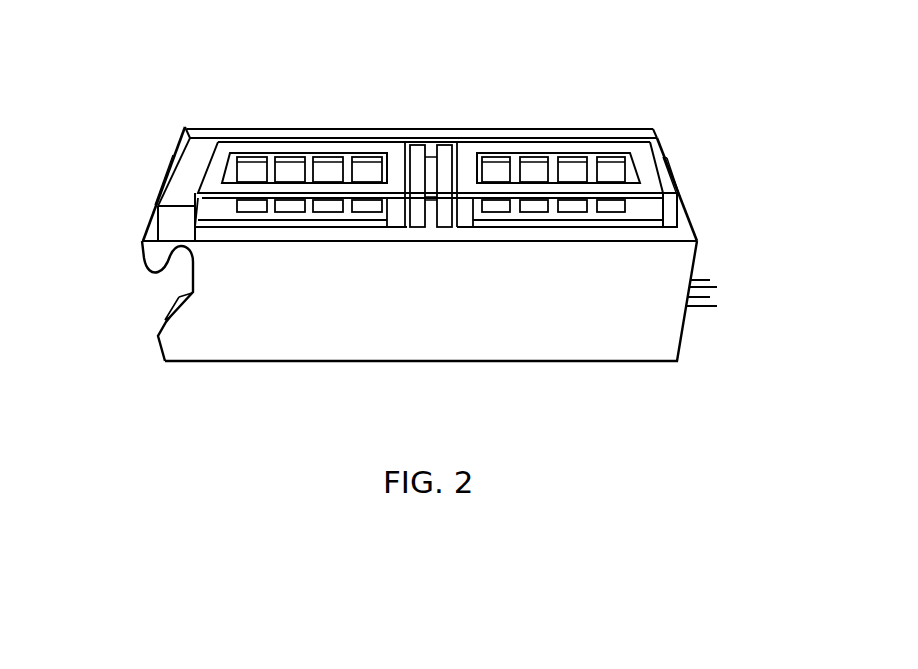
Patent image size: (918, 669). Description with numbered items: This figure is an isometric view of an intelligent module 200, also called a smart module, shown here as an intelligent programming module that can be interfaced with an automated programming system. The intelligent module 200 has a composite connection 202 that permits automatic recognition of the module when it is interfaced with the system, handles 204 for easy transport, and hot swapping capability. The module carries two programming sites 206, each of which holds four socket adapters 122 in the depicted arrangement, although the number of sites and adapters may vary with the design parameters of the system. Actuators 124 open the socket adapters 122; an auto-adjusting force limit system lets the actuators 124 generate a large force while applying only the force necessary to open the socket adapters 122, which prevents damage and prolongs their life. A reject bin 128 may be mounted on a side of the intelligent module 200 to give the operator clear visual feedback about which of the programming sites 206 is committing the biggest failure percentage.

The intelligent module 200 is at (168, 90).
The reject bin 128 is at (256, 136).
The socket adapters 122 is at (488, 170).
The actuators 124 is at (528, 148).
The programming sites 206 is at (668, 146).
The handles 204 is at (158, 263).
The composite connection 202 is at (717, 306).